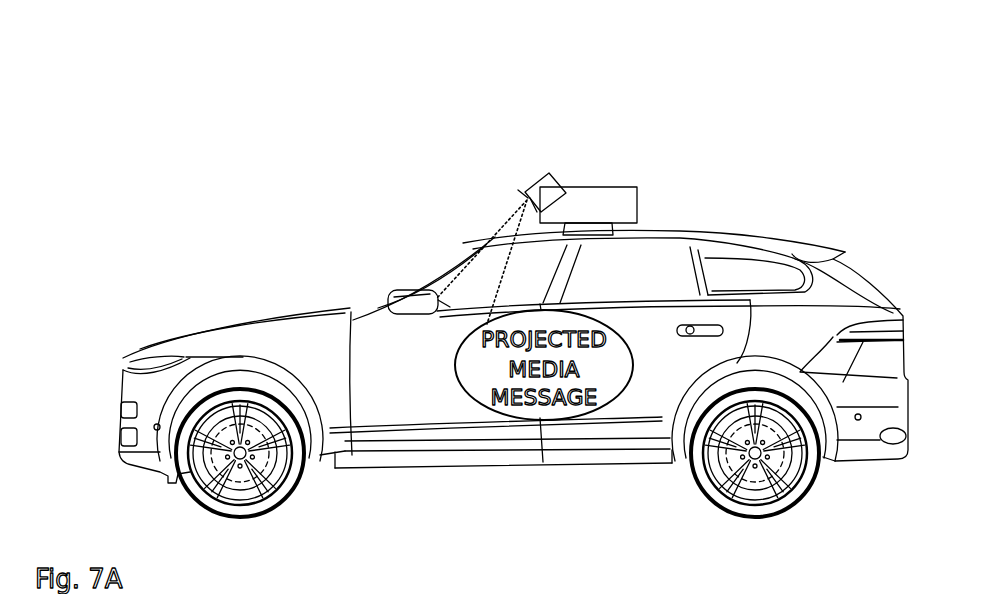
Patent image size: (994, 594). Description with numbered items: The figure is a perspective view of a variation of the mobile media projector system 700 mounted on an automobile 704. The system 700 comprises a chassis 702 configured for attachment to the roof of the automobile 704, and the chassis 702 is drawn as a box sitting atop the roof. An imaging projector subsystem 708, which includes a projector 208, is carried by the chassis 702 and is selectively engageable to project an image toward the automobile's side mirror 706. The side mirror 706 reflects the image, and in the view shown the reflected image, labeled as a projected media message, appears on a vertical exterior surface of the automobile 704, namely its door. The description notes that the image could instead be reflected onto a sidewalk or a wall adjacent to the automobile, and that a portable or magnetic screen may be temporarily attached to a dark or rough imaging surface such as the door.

The mobile media projector system 700 is at (163, 187).
The chassis 702 is at (638, 203).
The automobile 704 is at (297, 363).
The side mirror 706 is at (405, 294).
The imaging projector subsystem 708 is at (600, 187).
The projector 208 is at (527, 192).